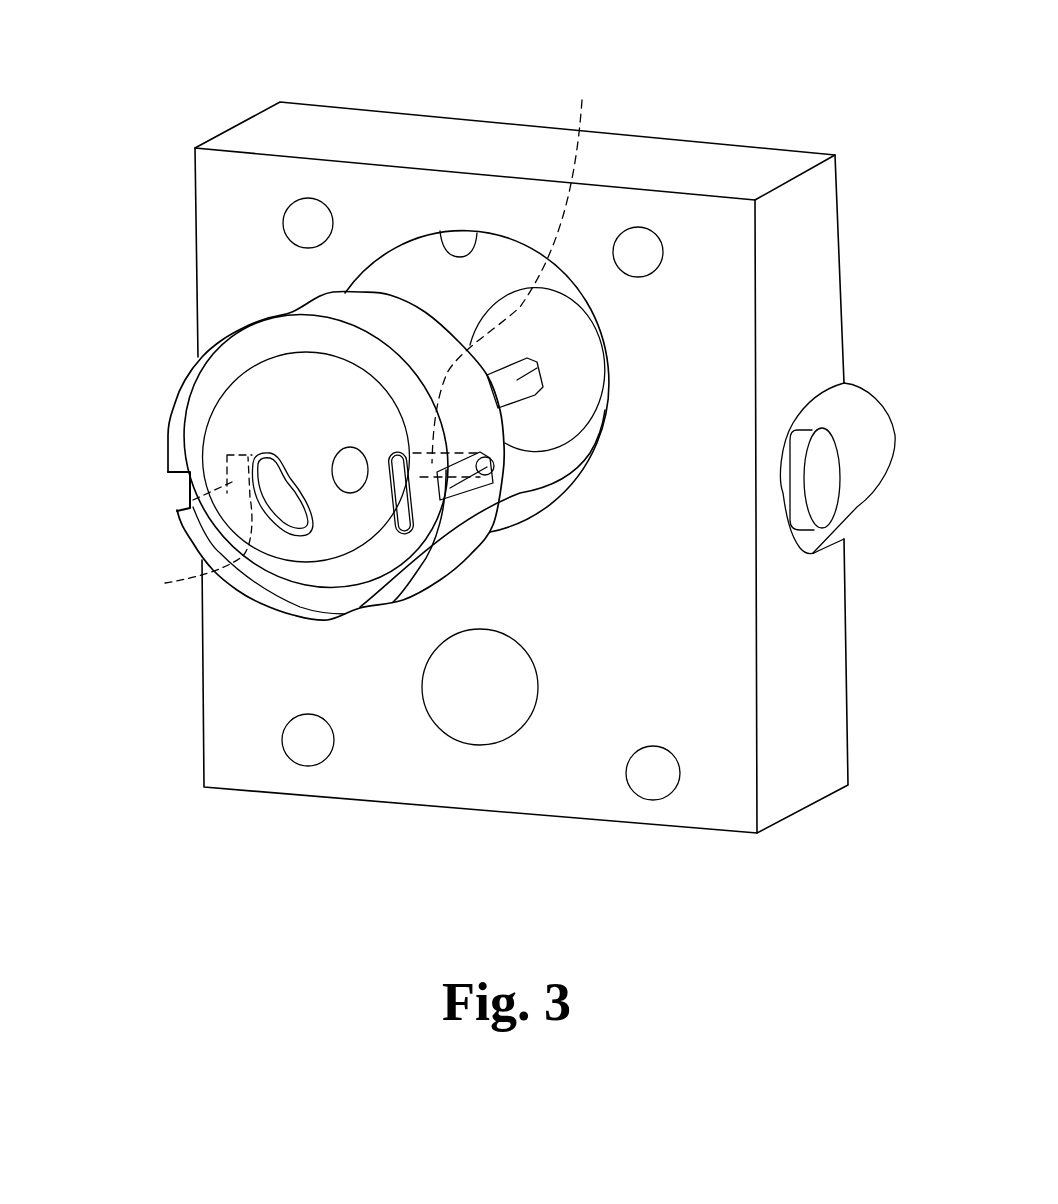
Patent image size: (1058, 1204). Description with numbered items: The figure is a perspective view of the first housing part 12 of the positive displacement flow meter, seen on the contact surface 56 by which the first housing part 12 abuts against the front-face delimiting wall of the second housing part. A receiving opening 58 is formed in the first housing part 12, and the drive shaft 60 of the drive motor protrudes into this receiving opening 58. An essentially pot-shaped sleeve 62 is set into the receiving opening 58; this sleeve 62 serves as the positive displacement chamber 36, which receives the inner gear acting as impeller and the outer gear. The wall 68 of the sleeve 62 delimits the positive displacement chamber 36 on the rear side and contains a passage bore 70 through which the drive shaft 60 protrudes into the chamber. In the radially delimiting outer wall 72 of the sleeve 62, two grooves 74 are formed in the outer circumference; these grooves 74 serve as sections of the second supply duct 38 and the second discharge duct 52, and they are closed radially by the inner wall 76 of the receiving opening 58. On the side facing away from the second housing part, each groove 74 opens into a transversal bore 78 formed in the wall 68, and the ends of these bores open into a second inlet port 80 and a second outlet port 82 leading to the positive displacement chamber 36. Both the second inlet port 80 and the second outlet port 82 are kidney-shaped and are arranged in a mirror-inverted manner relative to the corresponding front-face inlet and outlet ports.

The first housing part 12 is at (782, 307).
The positive displacement chamber 36 is at (260, 413).
The second supply duct 38 is at (447, 492).
The second discharge duct 52 is at (213, 512).
The contact surface 56 is at (490, 772).
The receiving opening 58 is at (437, 230).
The drive shaft 60 is at (537, 362).
The sleeve 62 is at (223, 365).
The wall 68 is at (312, 383).
The passage bore 70 is at (345, 464).
The outer wall 72 is at (455, 535).
The grooves 74 is at (180, 483).
The inner wall 76 is at (393, 297).
The transversal bore 78 is at (368, 334).
The second inlet port 80 is at (390, 462).
The second outlet port 82 is at (262, 570).